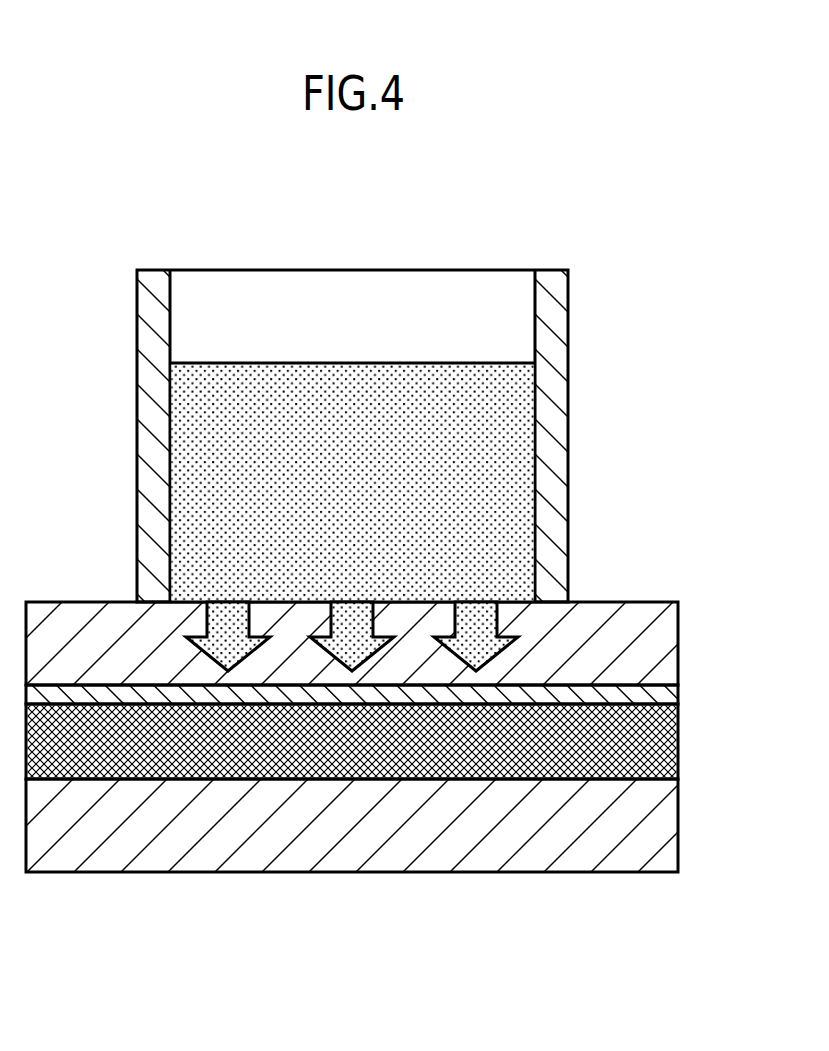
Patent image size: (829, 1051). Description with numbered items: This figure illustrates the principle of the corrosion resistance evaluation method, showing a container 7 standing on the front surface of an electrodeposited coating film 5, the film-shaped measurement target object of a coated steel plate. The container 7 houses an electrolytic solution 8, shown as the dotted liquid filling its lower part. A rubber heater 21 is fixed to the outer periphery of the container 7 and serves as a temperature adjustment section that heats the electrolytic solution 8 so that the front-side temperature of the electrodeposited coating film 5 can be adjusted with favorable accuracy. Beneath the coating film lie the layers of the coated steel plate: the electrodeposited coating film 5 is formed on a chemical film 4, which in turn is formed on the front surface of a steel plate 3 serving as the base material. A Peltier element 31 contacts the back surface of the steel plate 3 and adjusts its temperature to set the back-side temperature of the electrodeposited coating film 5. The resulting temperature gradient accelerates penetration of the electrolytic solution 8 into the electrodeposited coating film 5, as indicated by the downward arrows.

The container 7 is at (503, 267).
The rubber heater 21 is at (558, 392).
The electrolytic solution 8 is at (515, 494).
The electrodeposited coating film 5 is at (665, 643).
The chemical film 4 is at (665, 693).
The steel plate 3 is at (665, 739).
The Peltier element 31 is at (665, 825).